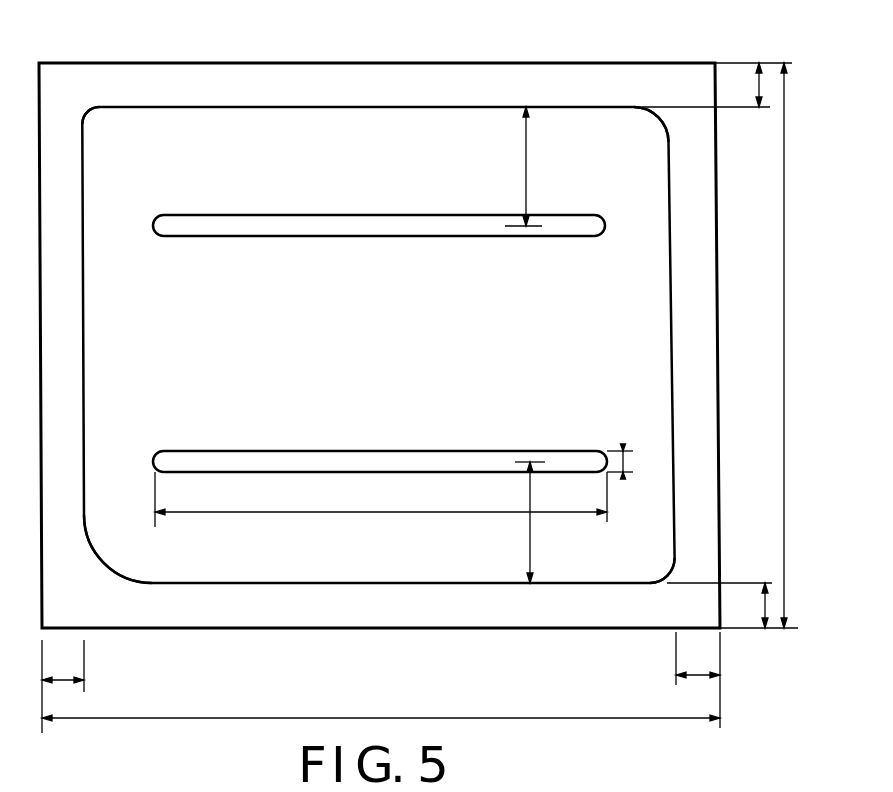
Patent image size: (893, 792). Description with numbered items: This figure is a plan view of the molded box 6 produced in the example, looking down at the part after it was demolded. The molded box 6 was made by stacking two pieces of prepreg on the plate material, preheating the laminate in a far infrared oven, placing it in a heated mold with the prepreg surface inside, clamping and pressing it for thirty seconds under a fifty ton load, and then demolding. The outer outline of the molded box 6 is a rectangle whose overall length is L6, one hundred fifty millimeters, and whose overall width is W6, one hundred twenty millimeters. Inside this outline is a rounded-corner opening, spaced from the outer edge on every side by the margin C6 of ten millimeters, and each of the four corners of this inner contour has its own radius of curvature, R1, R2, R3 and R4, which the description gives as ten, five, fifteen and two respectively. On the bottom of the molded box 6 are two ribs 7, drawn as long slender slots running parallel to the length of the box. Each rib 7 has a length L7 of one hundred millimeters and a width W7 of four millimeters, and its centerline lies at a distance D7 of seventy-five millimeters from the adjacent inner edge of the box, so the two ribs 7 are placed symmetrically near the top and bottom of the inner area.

The molded box 6 is at (440, 107).
The ribs 7 is at (150, 229).
The flange width of the molded box C6 is at (420, 398).
The width of the molded box W6 is at (806, 345).
The length of the molded box L6 is at (381, 703).
The rib offset distance D7 is at (547, 345).
The rib length L7 is at (381, 499).
The rib width W7 is at (639, 461).
The first corner radius of curvature R1 is at (641, 117).
The second corner radius of curvature R2 is at (667, 572).
The third corner radius of curvature R3 is at (105, 558).
The fourth corner radius of curvature R4 is at (88, 112).